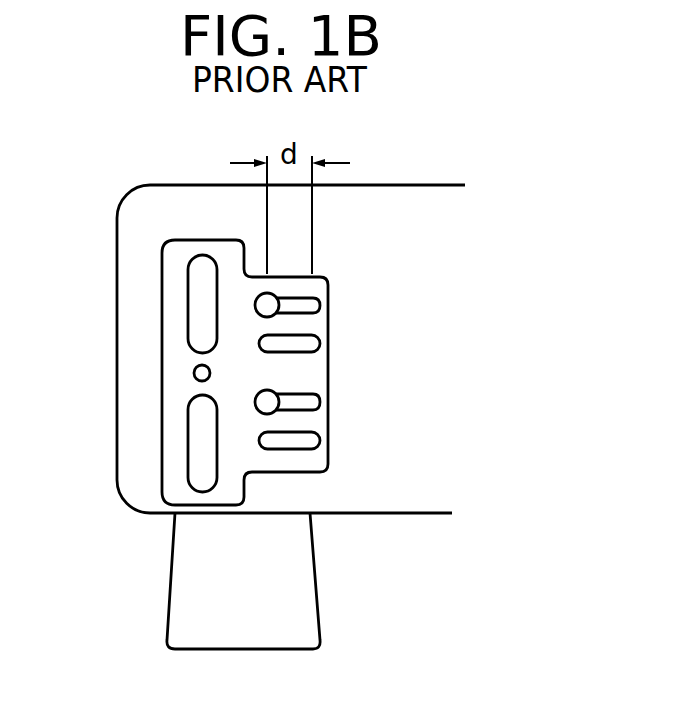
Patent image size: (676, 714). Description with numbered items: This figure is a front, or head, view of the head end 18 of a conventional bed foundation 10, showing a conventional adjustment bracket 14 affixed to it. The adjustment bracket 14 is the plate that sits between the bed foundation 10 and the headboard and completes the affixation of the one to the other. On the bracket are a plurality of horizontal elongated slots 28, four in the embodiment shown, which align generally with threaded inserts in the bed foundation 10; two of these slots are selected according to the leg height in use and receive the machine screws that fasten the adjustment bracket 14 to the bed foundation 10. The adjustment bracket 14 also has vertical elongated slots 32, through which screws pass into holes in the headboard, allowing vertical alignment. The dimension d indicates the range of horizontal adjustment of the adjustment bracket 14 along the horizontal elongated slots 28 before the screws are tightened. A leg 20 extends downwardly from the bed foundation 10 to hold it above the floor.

The bed foundation 10 is at (417, 185).
The adjustment bracket 14 is at (313, 372).
The head end 18 is at (408, 513).
The leg 20 is at (187, 570).
The horizontal elongated slots 28 is at (320, 305).
The vertical elongated slots 32 is at (199, 322).